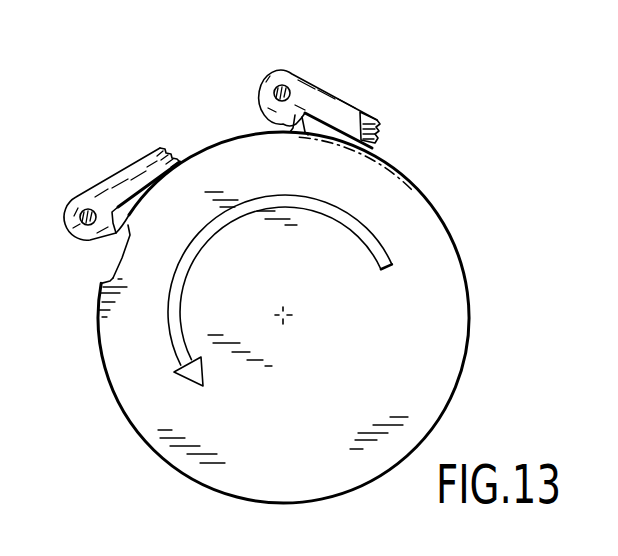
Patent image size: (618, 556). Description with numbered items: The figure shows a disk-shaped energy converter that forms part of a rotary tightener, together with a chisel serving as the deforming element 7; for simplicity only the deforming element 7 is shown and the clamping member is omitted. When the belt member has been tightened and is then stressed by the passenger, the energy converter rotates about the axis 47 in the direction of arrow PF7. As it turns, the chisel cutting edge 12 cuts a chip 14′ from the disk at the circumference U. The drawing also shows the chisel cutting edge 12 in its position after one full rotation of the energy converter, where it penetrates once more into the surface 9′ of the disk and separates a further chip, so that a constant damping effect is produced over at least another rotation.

The circumference U is at (430, 190).
The arrow PF7 is at (390, 259).
The axis 47 is at (290, 317).
The surface 9′ is at (119, 261).
The chip 14′ is at (303, 110).
The deforming element 7 is at (364, 108).
The chisel cutting edge 12 is at (137, 223).
The direction of lever movement a is at (88, 173).